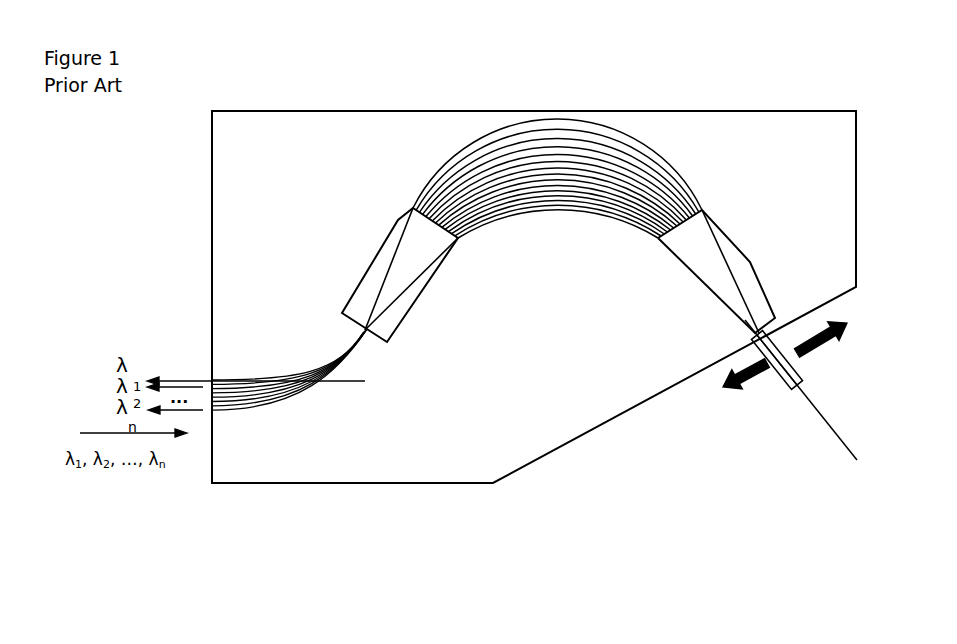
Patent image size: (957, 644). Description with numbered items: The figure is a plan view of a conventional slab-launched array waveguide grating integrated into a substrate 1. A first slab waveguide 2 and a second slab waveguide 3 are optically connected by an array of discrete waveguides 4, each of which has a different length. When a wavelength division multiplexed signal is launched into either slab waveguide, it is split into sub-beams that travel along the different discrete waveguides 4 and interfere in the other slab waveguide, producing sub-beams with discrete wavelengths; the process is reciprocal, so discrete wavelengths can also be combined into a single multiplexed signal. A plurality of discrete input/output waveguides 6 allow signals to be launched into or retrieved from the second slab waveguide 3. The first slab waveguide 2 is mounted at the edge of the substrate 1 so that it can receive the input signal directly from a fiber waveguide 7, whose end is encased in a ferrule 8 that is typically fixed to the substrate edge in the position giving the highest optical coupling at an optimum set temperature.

The substrate 1 is at (549, 351).
The first slab waveguide 2 is at (741, 202).
The second slab waveguide 3 is at (342, 265).
The array of discrete waveguides 4 is at (437, 161).
The discrete input/output waveguides 6 is at (302, 410).
The fiber waveguide 7 is at (818, 422).
The ferrule 8 is at (800, 370).